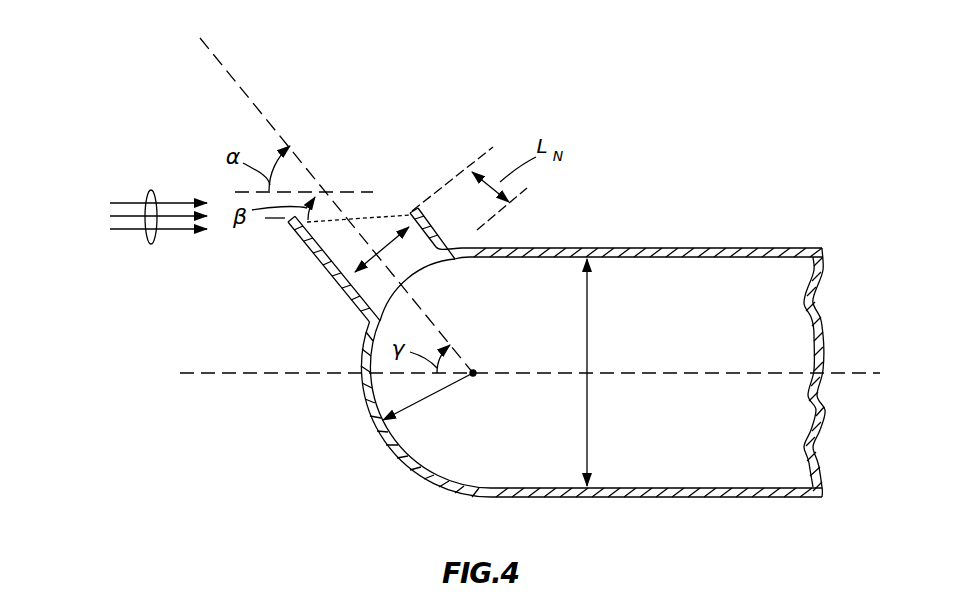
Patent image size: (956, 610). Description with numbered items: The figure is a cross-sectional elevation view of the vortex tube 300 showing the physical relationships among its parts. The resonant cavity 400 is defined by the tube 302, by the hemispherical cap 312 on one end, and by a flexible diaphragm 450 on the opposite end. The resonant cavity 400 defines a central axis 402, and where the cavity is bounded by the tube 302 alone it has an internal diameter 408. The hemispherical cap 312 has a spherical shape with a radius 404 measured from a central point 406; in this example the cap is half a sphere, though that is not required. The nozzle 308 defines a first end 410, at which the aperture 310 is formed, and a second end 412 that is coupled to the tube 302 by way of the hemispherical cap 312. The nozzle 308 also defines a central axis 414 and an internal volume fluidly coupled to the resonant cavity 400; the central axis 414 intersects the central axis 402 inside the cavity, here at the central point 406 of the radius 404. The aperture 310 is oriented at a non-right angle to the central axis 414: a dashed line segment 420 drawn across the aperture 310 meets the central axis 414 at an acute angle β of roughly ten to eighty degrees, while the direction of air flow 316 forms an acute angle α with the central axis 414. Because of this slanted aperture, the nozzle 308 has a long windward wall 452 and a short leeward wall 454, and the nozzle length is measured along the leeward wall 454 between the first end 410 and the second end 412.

The vortex tube 300 is at (699, 136).
The tube 302 is at (716, 247).
The nozzle 308 is at (330, 278).
The aperture 310 is at (379, 210).
The hemispherical cap 312 is at (393, 460).
The direction of air flow 316 is at (150, 243).
The resonant cavity 400 is at (742, 319).
The central axis 402 is at (242, 374).
The radius 404 is at (430, 397).
The central point 406 is at (474, 372).
The internal diameter 408 is at (588, 398).
The first end 410 is at (296, 234).
The second end 412 is at (363, 323).
The central axis 414 is at (233, 80).
The line segment 420 is at (408, 214).
The flexible diaphragm 450 is at (818, 317).
The windward wall 452 is at (322, 258).
The leeward wall 454 is at (457, 244).